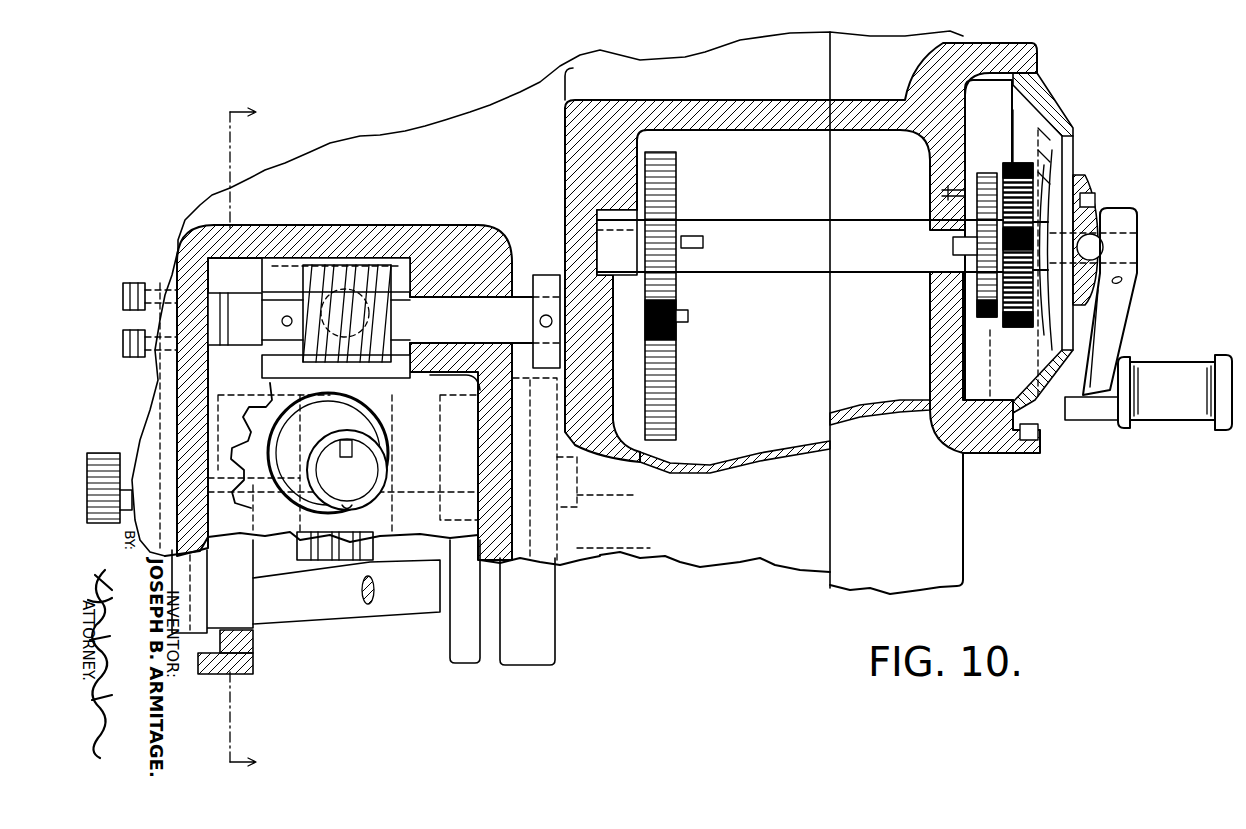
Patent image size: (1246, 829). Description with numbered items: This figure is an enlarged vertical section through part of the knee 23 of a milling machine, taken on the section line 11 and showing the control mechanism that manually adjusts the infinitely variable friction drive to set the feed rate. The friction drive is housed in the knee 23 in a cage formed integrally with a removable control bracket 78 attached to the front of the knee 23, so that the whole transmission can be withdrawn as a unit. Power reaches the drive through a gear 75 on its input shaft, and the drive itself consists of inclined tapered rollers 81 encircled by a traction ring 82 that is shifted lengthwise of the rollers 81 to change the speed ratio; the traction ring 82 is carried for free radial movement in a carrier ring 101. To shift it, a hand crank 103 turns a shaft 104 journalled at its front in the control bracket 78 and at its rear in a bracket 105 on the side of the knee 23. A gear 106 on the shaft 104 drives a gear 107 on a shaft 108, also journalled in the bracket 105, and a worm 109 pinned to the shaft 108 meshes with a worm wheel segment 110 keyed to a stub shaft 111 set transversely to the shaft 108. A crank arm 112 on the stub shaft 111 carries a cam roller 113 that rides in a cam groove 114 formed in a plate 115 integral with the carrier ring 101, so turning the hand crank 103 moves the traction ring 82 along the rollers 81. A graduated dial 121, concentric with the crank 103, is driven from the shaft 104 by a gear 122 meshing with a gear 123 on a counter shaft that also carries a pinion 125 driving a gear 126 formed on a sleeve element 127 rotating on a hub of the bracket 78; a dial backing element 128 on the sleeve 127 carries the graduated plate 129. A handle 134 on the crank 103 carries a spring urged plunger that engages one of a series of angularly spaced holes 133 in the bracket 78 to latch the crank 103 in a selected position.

The section line 11- 11 is at (258, 439).
The knee 23 is at (663, 535).
The gear 75 is at (104, 450).
The control bracket 78 is at (945, 548).
The tapered rollers 81 is at (368, 612).
The traction ring 82 is at (256, 645).
The carrier ring 101 is at (240, 675).
The hand crank 103 is at (1118, 313).
The shaft 104 is at (790, 263).
The bracket 105 is at (573, 163).
The gear 106 is at (675, 213).
The gear 107 is at (676, 395).
The shaft 108 is at (507, 307).
The worm 109 is at (343, 235).
The worm wheel segment 110 is at (235, 465).
The stub shaft 111 is at (338, 465).
The crank arm 112 is at (396, 422).
The cam roller 113 is at (312, 330).
The cam groove 114 is at (372, 265).
The plate 115 is at (297, 296).
The graduated dial 121 is at (1088, 134).
The gear 122 is at (972, 228).
The gear 123 is at (982, 173).
The pinion 125 is at (977, 262).
The gear 126 is at (1010, 328).
The sleeve element 127 is at (1040, 330).
The dial backing element 128 is at (1027, 105).
The plate 129 is at (1063, 113).
The holes 133 is at (1033, 437).
The handle 134 is at (1165, 415).